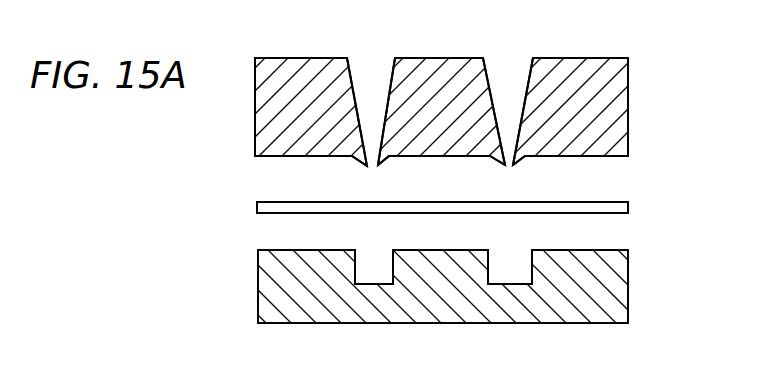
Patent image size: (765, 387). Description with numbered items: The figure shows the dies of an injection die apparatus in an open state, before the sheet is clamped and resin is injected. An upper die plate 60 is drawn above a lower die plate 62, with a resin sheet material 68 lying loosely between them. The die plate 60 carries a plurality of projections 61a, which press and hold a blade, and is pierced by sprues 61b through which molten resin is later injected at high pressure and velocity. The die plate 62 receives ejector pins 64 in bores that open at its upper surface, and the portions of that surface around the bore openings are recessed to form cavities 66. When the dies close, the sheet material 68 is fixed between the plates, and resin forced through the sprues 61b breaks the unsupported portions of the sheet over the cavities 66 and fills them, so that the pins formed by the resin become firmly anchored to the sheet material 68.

The die plate 60 is at (256, 108).
The projections 61a is at (381, 164).
The sprues 61b is at (505, 60).
The die plate 62 is at (258, 287).
The ejector pins 64 is at (507, 330).
The cavities 66 is at (503, 257).
The sheet material 68 is at (630, 208).